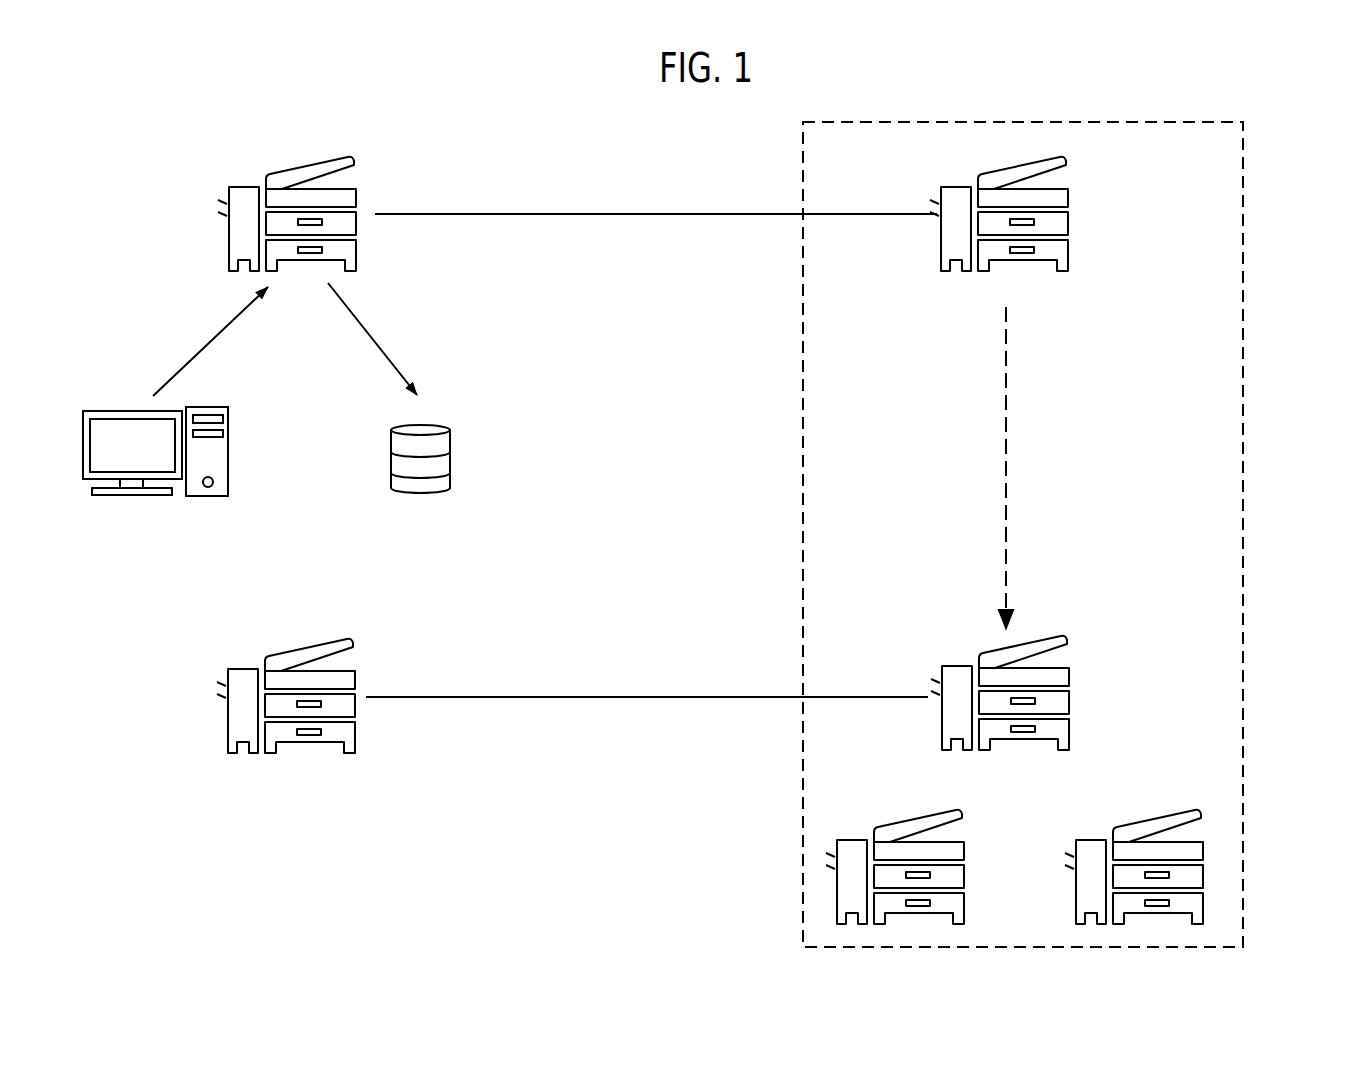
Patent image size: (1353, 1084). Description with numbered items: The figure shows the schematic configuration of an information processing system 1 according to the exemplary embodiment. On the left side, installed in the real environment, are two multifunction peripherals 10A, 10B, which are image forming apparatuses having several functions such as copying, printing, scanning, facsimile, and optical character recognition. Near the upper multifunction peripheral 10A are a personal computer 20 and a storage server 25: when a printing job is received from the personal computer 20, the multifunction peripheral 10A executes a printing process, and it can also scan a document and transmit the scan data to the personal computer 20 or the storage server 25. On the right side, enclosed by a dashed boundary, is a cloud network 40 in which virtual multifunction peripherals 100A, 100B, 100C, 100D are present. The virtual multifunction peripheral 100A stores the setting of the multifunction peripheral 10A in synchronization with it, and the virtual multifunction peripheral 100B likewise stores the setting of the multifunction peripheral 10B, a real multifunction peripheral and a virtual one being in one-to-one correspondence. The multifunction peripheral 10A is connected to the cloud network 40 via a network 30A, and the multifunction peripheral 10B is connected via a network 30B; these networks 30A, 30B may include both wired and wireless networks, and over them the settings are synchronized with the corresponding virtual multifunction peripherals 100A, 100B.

The information processing system 1 is at (207, 860).
The multifunction peripheral 10A is at (357, 200).
The multifunction peripheral 10B is at (355, 680).
The personal computer 20 is at (228, 423).
The storage server 25 is at (450, 442).
The network 30A is at (637, 213).
The network 30B is at (642, 697).
The cloud network 40 is at (1243, 198).
The virtual multifunction peripheral 100A is at (1068, 200).
The virtual multifunction peripheral 100B is at (1068, 677).
The virtual multifunction peripheral 100C is at (963, 852).
The virtual multifunction peripheral 100D is at (1202, 852).